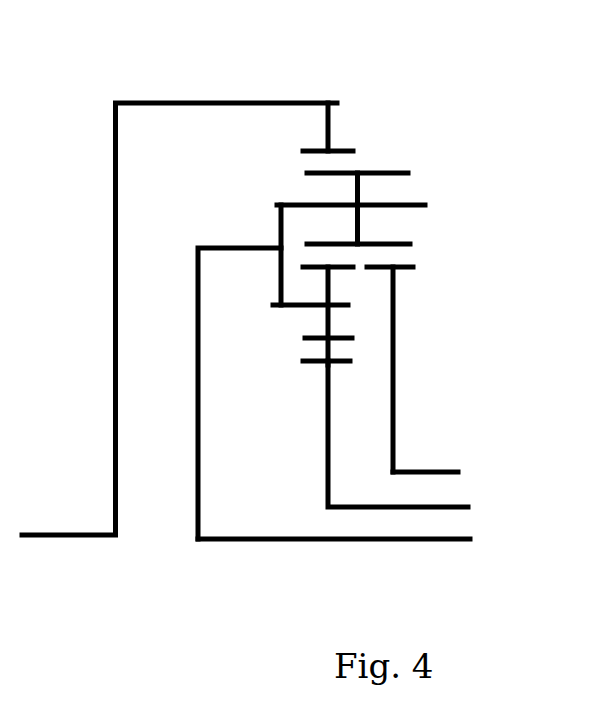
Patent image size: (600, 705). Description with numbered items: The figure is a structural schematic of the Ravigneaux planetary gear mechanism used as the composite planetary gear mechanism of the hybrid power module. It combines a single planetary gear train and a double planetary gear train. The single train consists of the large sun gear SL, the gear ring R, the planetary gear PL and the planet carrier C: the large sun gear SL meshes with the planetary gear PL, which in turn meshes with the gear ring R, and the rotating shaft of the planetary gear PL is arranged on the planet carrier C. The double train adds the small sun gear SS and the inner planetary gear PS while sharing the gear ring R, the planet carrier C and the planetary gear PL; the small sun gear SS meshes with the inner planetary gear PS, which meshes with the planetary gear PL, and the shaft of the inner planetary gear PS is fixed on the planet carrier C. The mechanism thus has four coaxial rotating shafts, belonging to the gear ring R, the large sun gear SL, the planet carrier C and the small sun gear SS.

The gear ring R is at (345, 138).
The planetary gear PL is at (413, 170).
The planet carrier C is at (328, 227).
The inner planetary gear PS is at (342, 318).
The large sun gear SL is at (397, 395).
The small sun gear SS is at (330, 457).